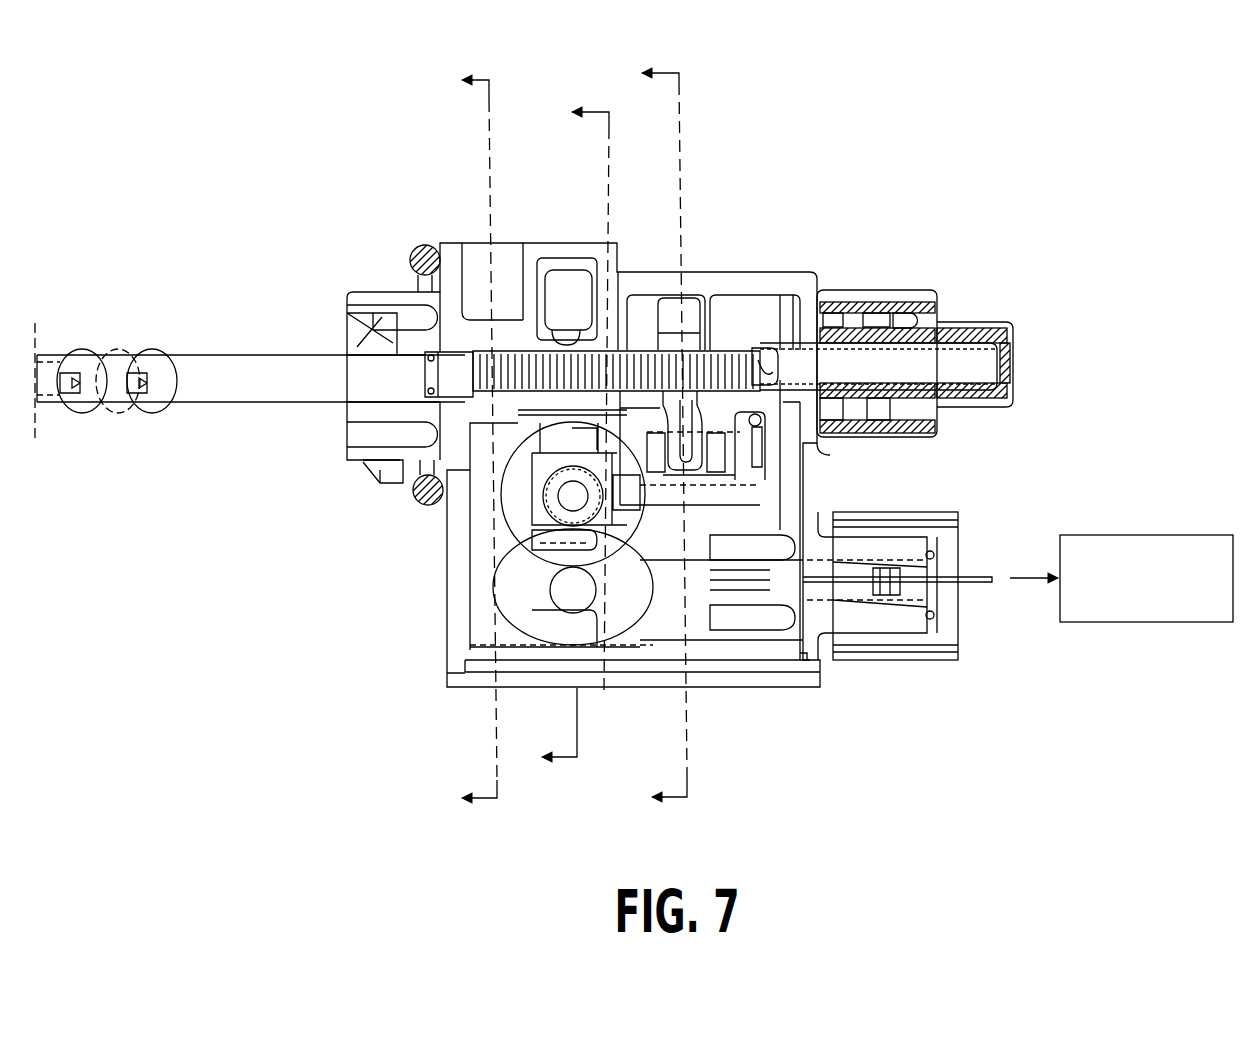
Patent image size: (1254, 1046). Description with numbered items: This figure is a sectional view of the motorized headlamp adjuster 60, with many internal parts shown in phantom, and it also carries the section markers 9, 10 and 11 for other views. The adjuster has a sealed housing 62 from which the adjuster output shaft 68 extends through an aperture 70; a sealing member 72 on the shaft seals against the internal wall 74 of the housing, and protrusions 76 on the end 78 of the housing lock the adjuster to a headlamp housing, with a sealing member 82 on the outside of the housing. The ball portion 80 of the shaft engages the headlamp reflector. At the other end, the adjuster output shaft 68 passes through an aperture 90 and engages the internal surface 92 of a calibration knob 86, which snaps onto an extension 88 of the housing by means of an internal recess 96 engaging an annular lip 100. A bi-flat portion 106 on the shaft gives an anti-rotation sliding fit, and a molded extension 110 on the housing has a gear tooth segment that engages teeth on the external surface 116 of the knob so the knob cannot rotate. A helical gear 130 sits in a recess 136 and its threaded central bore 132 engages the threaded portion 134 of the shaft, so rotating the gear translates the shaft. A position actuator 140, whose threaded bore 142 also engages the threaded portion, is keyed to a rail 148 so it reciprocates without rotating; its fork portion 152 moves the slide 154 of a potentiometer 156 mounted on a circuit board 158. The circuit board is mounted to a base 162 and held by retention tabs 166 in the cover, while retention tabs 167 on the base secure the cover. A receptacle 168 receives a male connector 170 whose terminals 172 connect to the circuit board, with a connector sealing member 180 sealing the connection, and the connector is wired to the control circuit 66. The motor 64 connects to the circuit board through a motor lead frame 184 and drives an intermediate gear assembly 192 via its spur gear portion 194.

The motorized headlamp adjuster 60 is at (858, 148).
The housing 62 is at (403, 292).
The motor 64 is at (483, 627).
The control circuit 66 is at (1178, 622).
The adjuster output shaft 68 is at (262, 386).
The aperture 70 is at (402, 355).
The sealing member 72 is at (400, 464).
The internal wall 74 is at (363, 432).
The protrusions 76 is at (387, 342).
The end of the housing 78 is at (340, 343).
The ball portion 80 is at (87, 400).
The sealing member 82 is at (428, 246).
The calibration knob 86 is at (943, 322).
The extension 88 is at (912, 360).
The aperture 90 is at (755, 345).
The internal surface 92 is at (937, 322).
The internal recess 96 is at (838, 420).
The annular lip 100 is at (888, 302).
The bi-flat portion 106 is at (917, 367).
The molded extension 110 is at (822, 455).
The external surface 116 is at (927, 437).
The helical gear 130 is at (573, 290).
The threaded central bore 132 is at (522, 351).
The threaded portion 134 is at (643, 352).
The recess 136 is at (556, 330).
The position actuator 140 is at (682, 308).
The threaded bore 142 is at (735, 285).
The rail 148 is at (717, 310).
The fork portion 152 is at (605, 530).
The potentiometer slide 154 is at (622, 527).
The potentiometer 156 is at (733, 505).
The circuit board 158 is at (780, 380).
The base 162 is at (517, 588).
The retention tabs 166 is at (755, 385).
The retention tabs 167 is at (795, 662).
The receptacle 168 is at (933, 657).
The male connector 170 is at (903, 650).
The terminals 172 is at (990, 583).
The connector sealing member 180 is at (934, 556).
The motor lead frame 184 is at (705, 617).
The intermediate gear assembly 192 is at (555, 545).
The spur gear portion 194 is at (470, 527).
The section line 9 is at (478, 440).
The section line 10 is at (575, 434).
The section line 11 is at (664, 437).